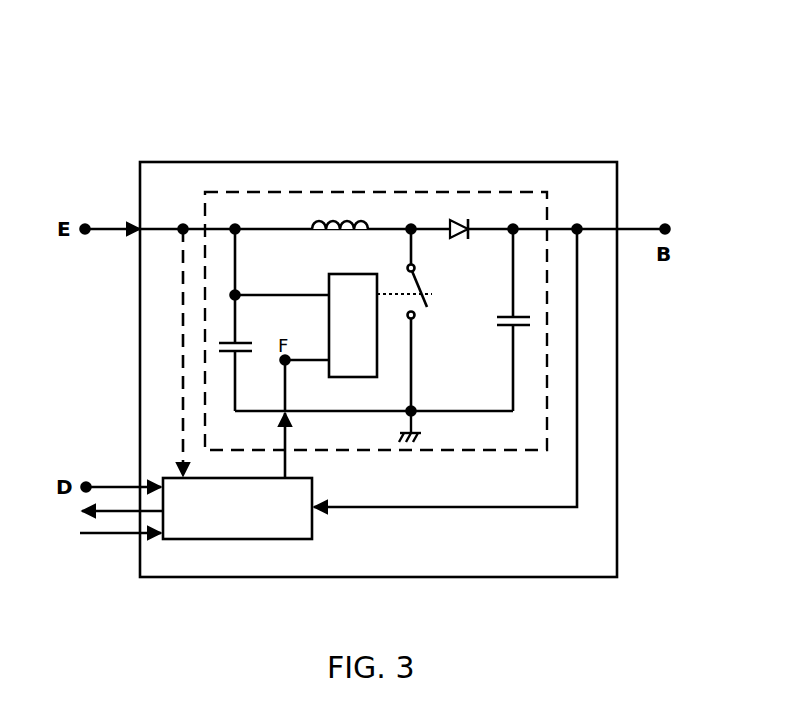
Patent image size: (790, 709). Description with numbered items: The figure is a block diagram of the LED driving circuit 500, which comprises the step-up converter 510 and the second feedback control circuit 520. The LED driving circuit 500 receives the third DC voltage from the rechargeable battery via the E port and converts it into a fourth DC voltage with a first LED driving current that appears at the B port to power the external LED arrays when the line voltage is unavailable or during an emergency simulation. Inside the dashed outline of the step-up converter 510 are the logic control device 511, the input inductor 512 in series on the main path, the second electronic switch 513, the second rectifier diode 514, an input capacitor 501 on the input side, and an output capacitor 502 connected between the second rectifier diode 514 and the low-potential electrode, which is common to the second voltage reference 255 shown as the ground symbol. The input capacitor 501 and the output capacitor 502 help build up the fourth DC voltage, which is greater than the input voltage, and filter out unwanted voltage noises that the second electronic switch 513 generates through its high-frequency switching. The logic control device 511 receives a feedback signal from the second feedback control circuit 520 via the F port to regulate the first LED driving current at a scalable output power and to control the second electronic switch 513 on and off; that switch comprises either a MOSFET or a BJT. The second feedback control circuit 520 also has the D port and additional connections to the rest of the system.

The LED driving circuit 500 is at (407, 160).
The step-up converter 510 is at (552, 455).
The logic control device 511 is at (329, 274).
The input inductor 512 is at (340, 212).
The second electronic switch 513 is at (425, 308).
The second rectifier diode 514 is at (461, 220).
The input capacitor 501 is at (228, 348).
The output capacitor 502 is at (523, 332).
The second voltage reference 255 is at (405, 440).
The second feedback control circuit 520 is at (317, 530).